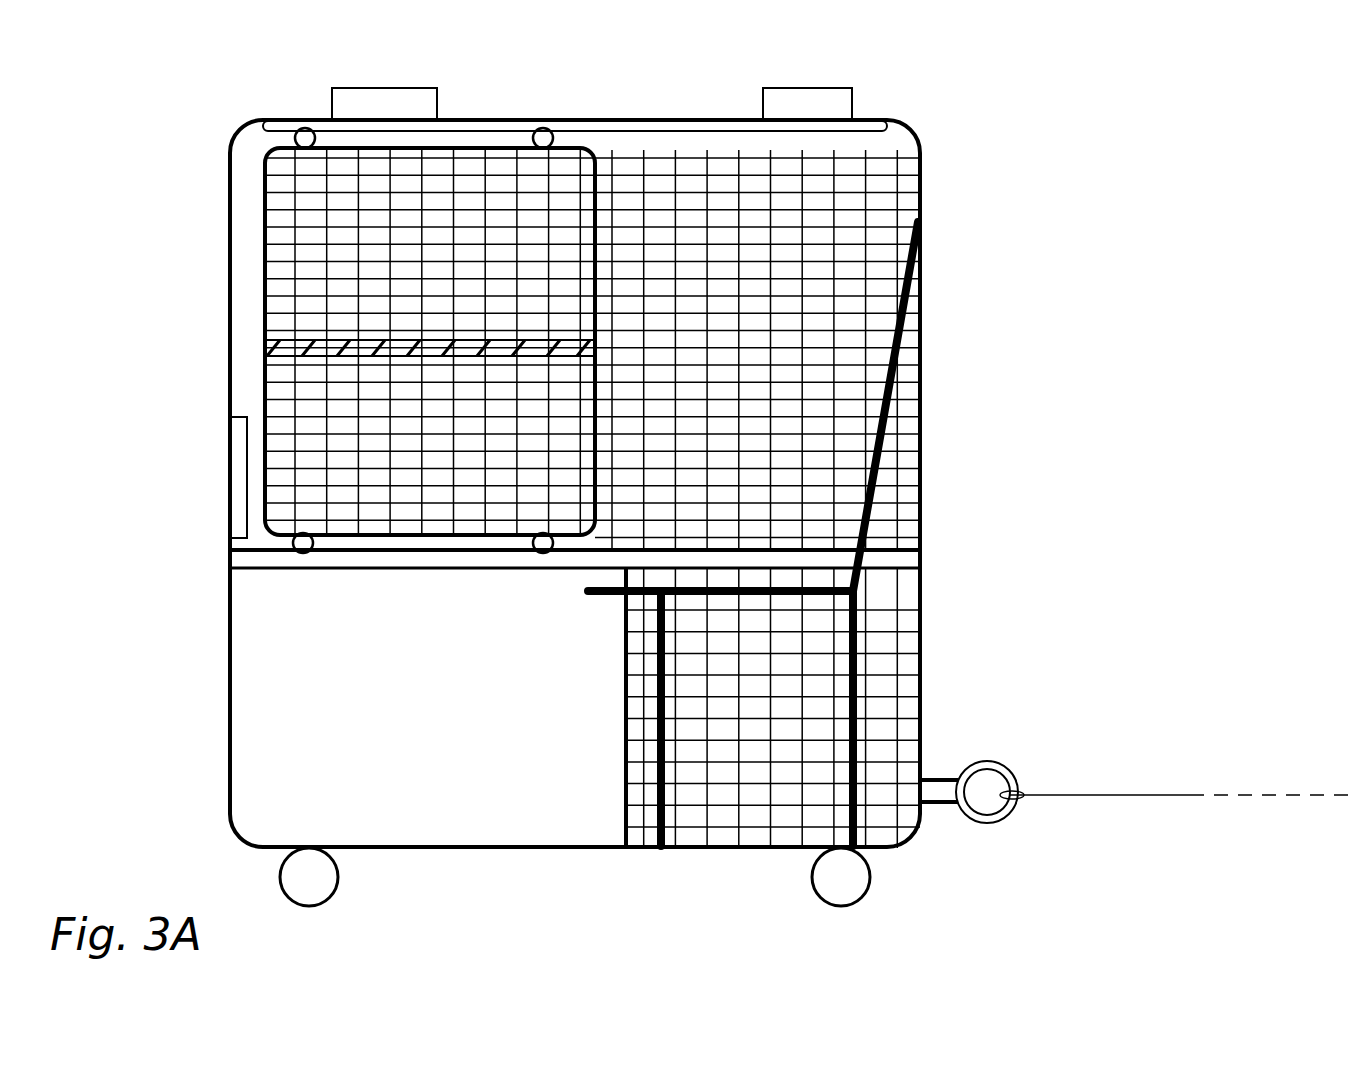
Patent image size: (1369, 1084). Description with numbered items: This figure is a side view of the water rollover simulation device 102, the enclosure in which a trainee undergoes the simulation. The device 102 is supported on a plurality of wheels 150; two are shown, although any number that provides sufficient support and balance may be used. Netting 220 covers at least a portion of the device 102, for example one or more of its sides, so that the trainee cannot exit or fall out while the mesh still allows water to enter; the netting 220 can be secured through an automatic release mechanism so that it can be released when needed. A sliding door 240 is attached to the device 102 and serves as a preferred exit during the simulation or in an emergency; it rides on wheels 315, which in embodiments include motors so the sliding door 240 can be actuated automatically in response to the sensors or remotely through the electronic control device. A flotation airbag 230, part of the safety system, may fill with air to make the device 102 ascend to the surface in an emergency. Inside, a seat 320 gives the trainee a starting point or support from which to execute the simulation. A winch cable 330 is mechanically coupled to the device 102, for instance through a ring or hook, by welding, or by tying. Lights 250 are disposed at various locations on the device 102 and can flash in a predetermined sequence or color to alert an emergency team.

The device 102 is at (127, 81).
The plurality of wheels 150 is at (327, 897).
The netting 220 is at (866, 172).
The flotation airbags 230 is at (237, 512).
The sliding door 240 is at (260, 260).
The lights 250 is at (402, 87).
The wheels 315 is at (312, 549).
The seat 320 is at (610, 595).
The winch cable 330 is at (1145, 793).